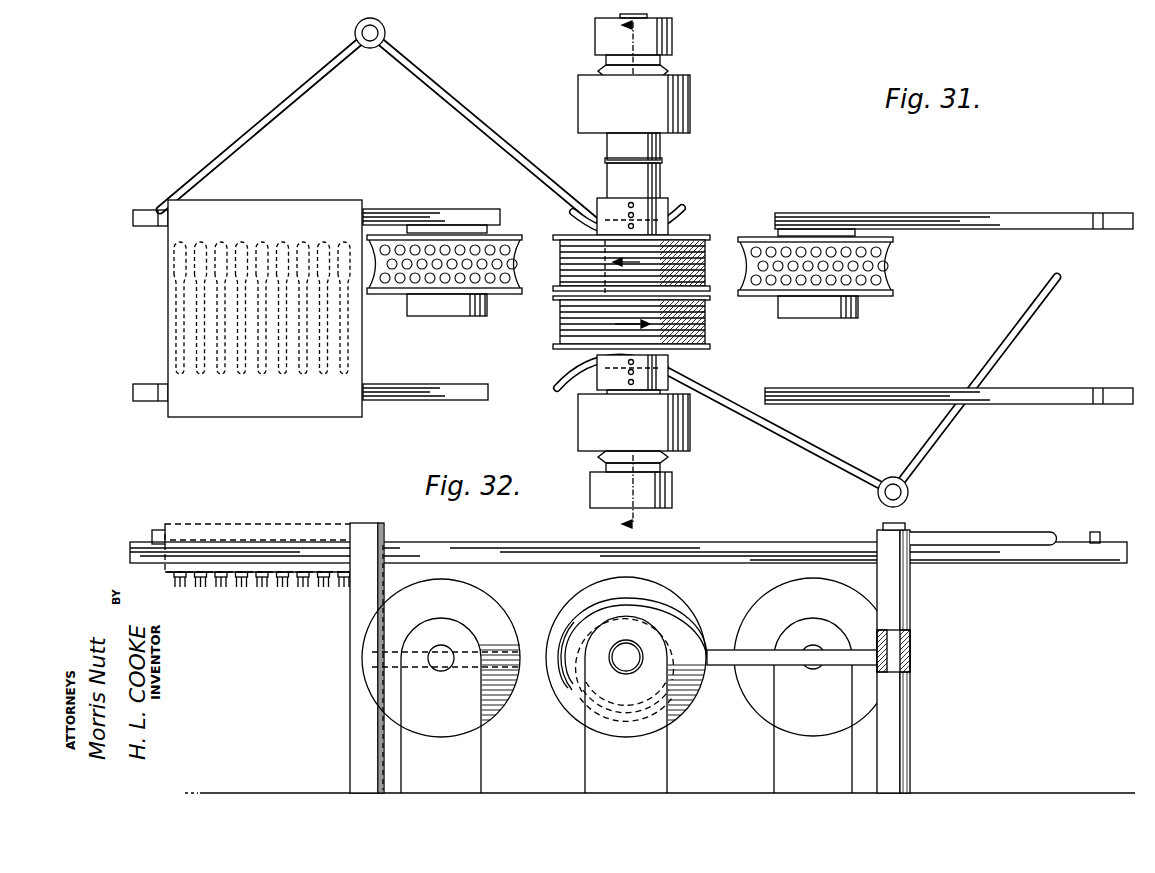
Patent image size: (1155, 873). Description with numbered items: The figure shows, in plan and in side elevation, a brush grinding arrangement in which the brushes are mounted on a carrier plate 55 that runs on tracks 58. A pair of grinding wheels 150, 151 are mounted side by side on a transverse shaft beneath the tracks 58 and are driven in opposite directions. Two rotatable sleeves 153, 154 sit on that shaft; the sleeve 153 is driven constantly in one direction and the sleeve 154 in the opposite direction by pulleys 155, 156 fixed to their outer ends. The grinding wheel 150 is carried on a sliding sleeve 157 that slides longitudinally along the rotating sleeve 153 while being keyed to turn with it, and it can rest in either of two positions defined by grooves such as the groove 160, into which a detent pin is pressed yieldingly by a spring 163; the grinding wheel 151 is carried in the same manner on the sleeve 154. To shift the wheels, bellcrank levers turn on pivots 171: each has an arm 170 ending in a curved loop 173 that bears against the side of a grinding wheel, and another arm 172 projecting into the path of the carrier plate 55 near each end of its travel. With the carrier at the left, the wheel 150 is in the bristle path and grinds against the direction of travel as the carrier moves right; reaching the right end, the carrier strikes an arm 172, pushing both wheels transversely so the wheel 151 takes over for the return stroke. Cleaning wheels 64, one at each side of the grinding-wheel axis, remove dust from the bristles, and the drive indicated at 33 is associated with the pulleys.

In FIG. 31, the motor/drive unit 33 is at (634, 25).
In FIG. 31, the carrier plate 55 is at (275, 398).
In FIG. 32, the carrier plate 55 is at (294, 524).
In FIG. 31, the tracks 58 is at (470, 212).
In FIG. 32, the tracks 58 is at (526, 543).
In FIG. 31, the cleaning wheels 64 is at (395, 292).
In FIG. 32, the cleaning wheels 64 is at (488, 606).
In FIG. 31, the grinding wheel 150 is at (573, 238).
In FIG. 31, the grinding wheel 151 is at (562, 322).
In FIG. 32, the grinding wheel 151 is at (585, 598).
In FIG. 31, the rotatable sleeve 153 is at (608, 149).
In FIG. 31, the rotatable sleeve 154 is at (585, 393).
In FIG. 31, the pulley 155 is at (585, 82).
In FIG. 31, the pulley 156 is at (688, 440).
In FIG. 32, the pulley 156 is at (580, 672).
In FIG. 31, the sliding sleeve 157 is at (612, 172).
In FIG. 31, the groove 160 is at (662, 161).
In FIG. 31, the spring 163 is at (640, 206).
In FIG. 31, the bellcrank arm 170 is at (495, 128).
In FIG. 32, the bellcrank arm 170 is at (722, 660).
In FIG. 31, the pivot 171 is at (388, 32).
In FIG. 32, the pivot 171 is at (898, 635).
In FIG. 31, the bellcrank arm 172 is at (287, 100).
In FIG. 32, the bellcrank arm 172 is at (1022, 531).
In FIG. 31, the curved loop 173 is at (682, 212).
In FIG. 32, the curved loop 173 is at (690, 640).